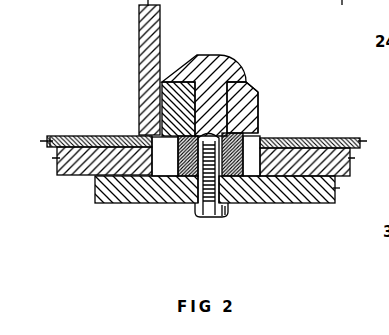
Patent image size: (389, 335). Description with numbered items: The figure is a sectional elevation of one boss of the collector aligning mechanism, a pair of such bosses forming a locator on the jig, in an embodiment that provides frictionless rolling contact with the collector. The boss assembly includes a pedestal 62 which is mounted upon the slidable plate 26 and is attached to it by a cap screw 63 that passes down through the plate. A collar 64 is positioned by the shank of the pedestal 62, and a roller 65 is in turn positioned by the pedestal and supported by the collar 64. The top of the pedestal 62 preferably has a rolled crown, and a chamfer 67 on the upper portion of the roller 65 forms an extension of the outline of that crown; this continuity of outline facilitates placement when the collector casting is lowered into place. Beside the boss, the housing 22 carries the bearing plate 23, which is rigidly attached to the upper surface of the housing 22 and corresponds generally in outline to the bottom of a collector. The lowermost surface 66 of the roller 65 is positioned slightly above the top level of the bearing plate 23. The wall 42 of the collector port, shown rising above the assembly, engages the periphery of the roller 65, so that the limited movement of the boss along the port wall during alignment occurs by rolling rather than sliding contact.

The wall 42 is at (138, 37).
The bearing plate 23 is at (88, 135).
The housing 22 is at (77, 186).
The slidable plate 26 is at (153, 203).
The pedestal 62 is at (218, 92).
The roller 65 is at (251, 113).
The lowermost surface 66 is at (260, 105).
The chamfer 67 is at (258, 83).
The collar 64 is at (174, 161).
The cap screw 63 is at (215, 218).